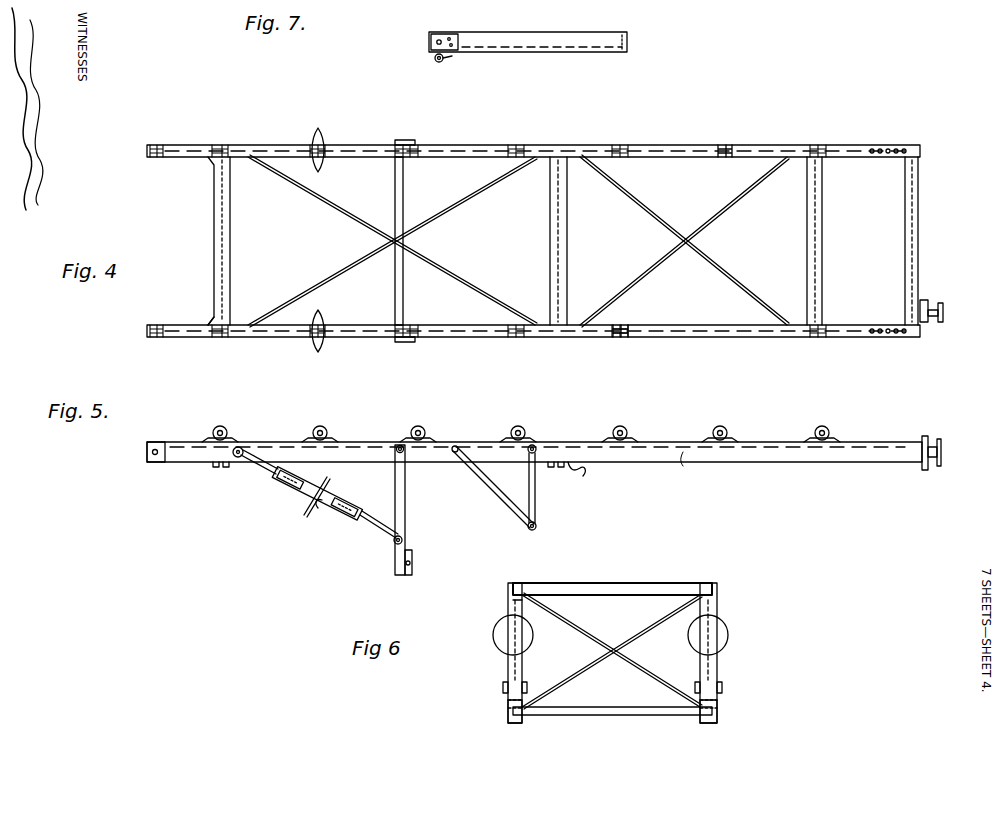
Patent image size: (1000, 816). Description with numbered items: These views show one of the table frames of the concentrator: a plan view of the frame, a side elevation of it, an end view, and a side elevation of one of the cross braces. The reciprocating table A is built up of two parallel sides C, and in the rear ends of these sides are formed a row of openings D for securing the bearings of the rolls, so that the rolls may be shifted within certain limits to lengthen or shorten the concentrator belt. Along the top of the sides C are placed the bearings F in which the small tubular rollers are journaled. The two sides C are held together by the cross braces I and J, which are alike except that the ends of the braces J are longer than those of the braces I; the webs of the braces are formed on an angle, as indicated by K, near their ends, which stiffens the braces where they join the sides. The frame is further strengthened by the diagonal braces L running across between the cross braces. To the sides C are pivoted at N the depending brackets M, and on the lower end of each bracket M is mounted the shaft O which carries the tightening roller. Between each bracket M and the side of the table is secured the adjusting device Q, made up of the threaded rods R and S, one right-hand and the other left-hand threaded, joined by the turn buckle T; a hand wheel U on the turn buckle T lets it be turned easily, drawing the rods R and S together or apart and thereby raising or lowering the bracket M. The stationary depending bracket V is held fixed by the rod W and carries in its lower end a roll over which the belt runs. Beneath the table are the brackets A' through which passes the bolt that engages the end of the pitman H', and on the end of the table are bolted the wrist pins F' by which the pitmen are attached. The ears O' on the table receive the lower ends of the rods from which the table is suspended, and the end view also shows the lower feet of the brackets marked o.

In FIG. 4, the reciprocating table A is at (533, 227).
In FIG. 5, the reciprocating table A is at (534, 436).
In FIG. 7, the bracket A' is at (454, 58).
In FIG. 4, the side C is at (478, 152).
In FIG. 5, the side C is at (684, 462).
In FIG. 6, the side C is at (514, 584).
In FIG. 4, the opening D is at (880, 147).
In FIG. 5, the bearing F is at (521, 423).
In FIG. 4, the wrist pin F' is at (744, 138).
In FIG. 5, the wrist pin F' is at (947, 453).
In FIG. 4, the cross brace I is at (805, 238).
In FIG. 7, the cross brace J is at (582, 53).
In FIG. 4, the cross brace J is at (232, 272).
In FIG. 4, the angled web K is at (212, 322).
In FIG. 4, the diagonal brace L is at (431, 233).
In FIG. 4, the depending bracket M is at (406, 141).
In FIG. 5, the depending bracket M is at (406, 512).
In FIG. 6, the depending bracket M is at (508, 668).
In FIG. 5, the pivot N is at (400, 445).
In FIG. 4, the shaft O is at (416, 241).
In FIG. 5, the shaft O is at (419, 562).
In FIG. 5, the ear O' is at (145, 471).
In FIG. 5, the adjusting device Q is at (318, 522).
In FIG. 5, the threaded rod R is at (370, 532).
In FIG. 6, the threaded rod R is at (503, 688).
In FIG. 5, the threaded rod S is at (260, 474).
In FIG. 5, the turn buckle T is at (290, 495).
In FIG. 5, the hand wheel U is at (332, 482).
In FIG. 6, the hand wheel U is at (534, 640).
In FIG. 5, the stationary depending bracket V is at (537, 498).
In FIG. 5, the rod W is at (500, 502).
In FIG. 5, the pitman H' is at (585, 474).
In FIG. 6, the foot o is at (508, 716).